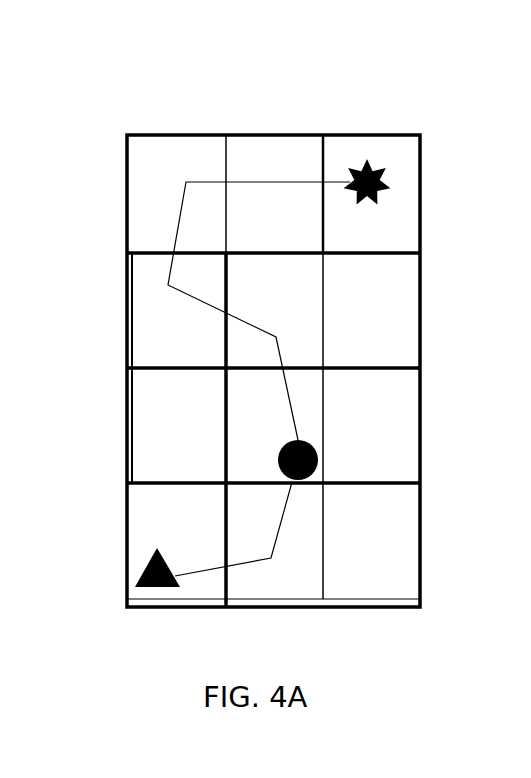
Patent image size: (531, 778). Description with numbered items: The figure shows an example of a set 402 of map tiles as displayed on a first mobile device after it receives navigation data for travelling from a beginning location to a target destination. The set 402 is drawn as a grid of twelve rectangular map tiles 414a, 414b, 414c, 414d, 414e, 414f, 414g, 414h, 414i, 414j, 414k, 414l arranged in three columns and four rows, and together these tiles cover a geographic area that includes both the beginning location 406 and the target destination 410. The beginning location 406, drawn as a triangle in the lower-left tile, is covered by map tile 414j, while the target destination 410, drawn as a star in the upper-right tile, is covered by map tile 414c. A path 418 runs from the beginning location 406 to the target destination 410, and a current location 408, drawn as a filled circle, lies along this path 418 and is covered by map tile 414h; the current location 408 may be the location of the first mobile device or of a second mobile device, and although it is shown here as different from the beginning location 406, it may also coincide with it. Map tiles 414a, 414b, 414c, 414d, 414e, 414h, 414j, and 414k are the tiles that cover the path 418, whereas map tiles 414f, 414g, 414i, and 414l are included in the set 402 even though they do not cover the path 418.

The set of map tiles 402 is at (114, 72).
The beginning location 406 is at (143, 580).
The current location 408 is at (320, 459).
The target destination 410 is at (385, 185).
The map tile 414a is at (165, 156).
The map tile 414b is at (276, 156).
The map tile 414c is at (382, 151).
The map tile 414d is at (148, 322).
The map tile 414e is at (300, 322).
The map tile 414f is at (395, 348).
The map tile 414g is at (146, 421).
The map tile 414h is at (300, 405).
The map tile 414i is at (405, 458).
The map tile 414j is at (149, 506).
The map tile 414k is at (300, 553).
The map tile 414l is at (395, 578).
The path 418 is at (175, 232).